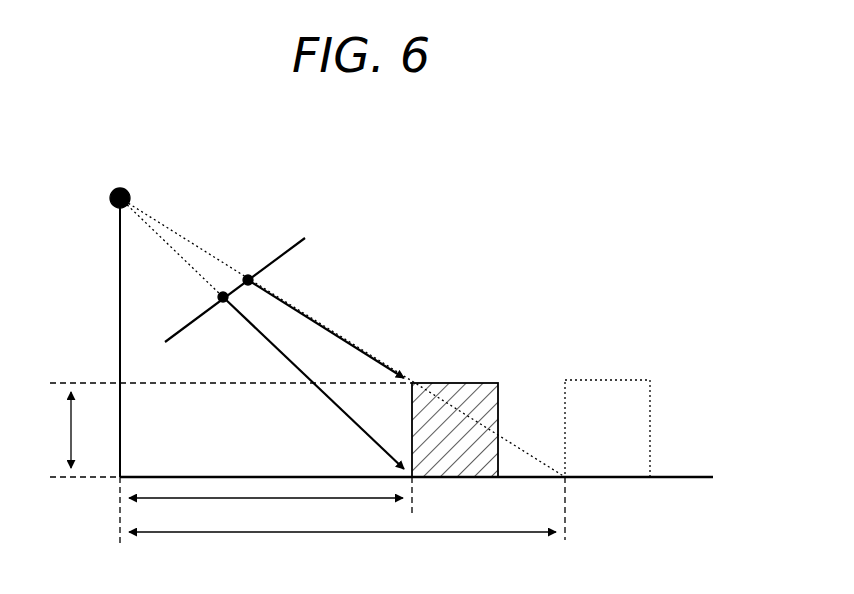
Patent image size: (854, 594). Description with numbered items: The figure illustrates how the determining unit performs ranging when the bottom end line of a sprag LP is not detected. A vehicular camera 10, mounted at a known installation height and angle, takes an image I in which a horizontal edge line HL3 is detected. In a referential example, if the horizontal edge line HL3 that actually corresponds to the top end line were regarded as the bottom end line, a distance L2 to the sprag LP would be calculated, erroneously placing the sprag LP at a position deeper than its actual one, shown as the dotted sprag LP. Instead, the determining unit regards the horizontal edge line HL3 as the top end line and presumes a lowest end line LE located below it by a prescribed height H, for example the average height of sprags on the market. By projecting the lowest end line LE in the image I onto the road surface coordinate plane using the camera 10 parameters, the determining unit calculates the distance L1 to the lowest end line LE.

The vehicular camera 10 is at (120, 188).
The image I is at (299, 240).
The lowest end line LE is at (224, 291).
The horizontal edge line HL3 is at (249, 274).
The sprag LP is at (467, 382).
The prescribed height H is at (60, 430).
The distance to the lowest end line L1 is at (266, 512).
The distance to the sprag L2 is at (342, 547).